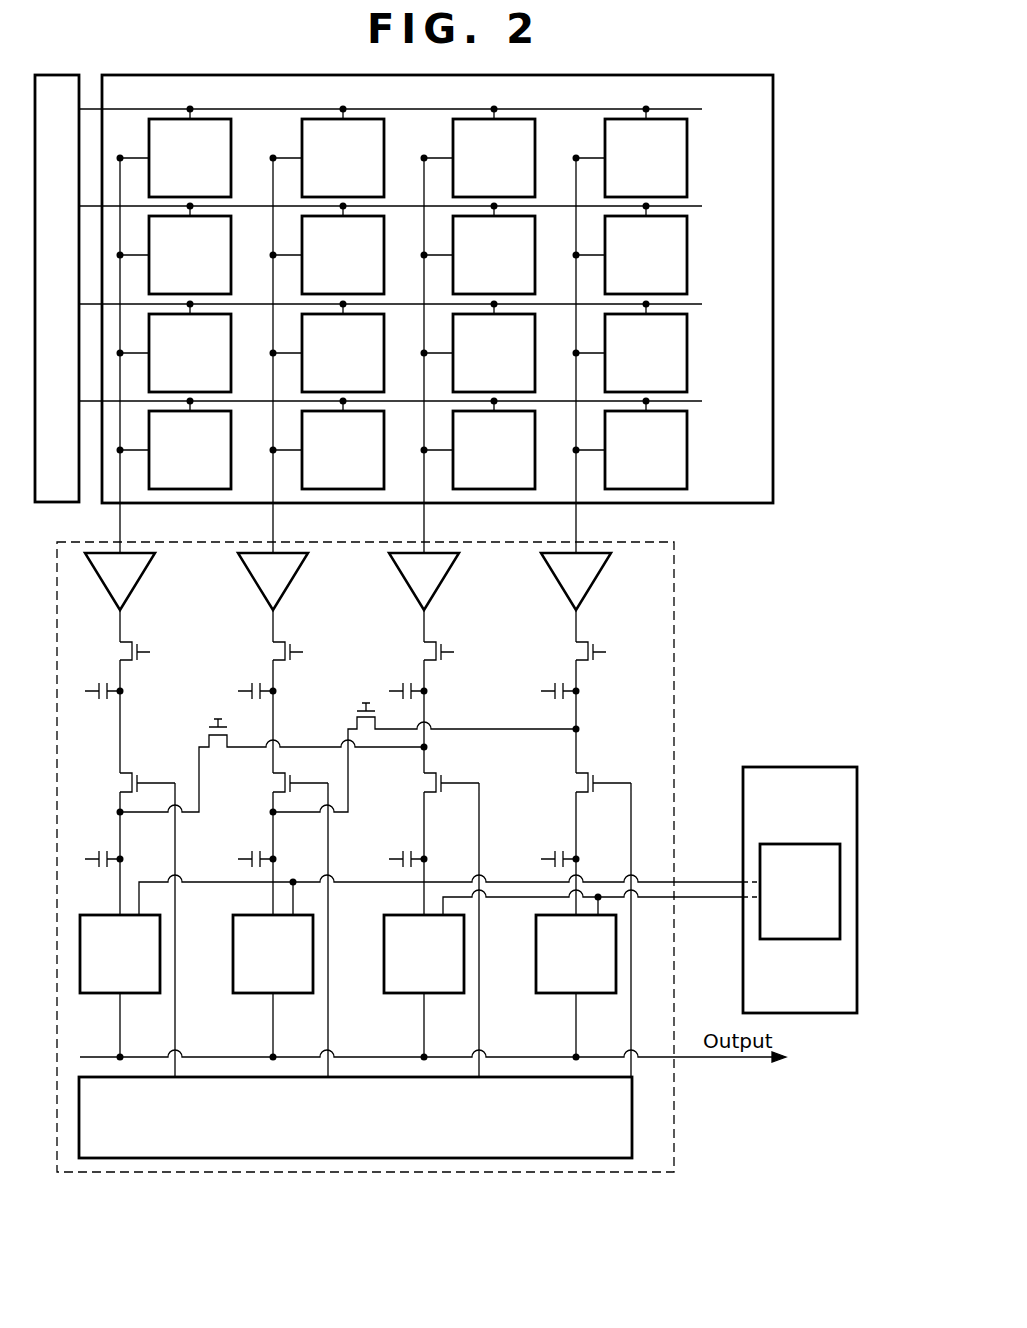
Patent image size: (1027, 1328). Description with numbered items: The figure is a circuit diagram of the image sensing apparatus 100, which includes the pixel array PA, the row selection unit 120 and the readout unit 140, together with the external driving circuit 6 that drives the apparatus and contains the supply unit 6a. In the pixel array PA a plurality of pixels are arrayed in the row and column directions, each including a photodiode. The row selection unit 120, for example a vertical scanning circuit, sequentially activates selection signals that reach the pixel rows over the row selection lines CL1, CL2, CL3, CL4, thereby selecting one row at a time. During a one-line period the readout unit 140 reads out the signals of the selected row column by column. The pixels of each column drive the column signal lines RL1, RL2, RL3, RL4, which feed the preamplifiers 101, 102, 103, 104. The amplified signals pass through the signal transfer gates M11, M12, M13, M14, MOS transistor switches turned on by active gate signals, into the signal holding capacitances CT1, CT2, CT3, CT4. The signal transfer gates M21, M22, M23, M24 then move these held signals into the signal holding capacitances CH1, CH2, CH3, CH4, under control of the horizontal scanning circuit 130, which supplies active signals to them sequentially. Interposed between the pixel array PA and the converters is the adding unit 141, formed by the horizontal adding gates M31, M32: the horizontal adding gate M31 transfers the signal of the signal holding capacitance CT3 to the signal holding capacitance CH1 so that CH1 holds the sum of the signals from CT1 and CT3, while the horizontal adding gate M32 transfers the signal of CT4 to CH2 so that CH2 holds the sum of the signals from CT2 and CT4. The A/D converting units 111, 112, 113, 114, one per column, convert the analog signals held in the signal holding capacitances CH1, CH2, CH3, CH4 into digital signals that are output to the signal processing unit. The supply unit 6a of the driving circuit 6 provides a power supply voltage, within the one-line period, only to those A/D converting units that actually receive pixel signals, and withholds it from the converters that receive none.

The row selection unit 120 is at (58, 73).
The pixel array PA is at (741, 528).
The row selection line CL1 is at (731, 145).
The row selection line CL2 is at (731, 242).
The row selection line CL3 is at (731, 340).
The row selection line CL4 is at (731, 437).
The column signal line RL1 is at (139, 525).
The column signal line RL2 is at (327, 330).
The column signal line RL3 is at (478, 330).
The column signal line RL4 is at (630, 330).
The preamplifier 101 is at (134, 592).
The preamplifier 102 is at (297, 597).
The preamplifier 103 is at (448, 597).
The preamplifier 104 is at (600, 597).
The signal transfer gate M11 is at (153, 701).
The signal transfer gate M12 is at (306, 701).
The signal transfer gate M13 is at (457, 701).
The signal transfer gate M14 is at (609, 701).
The signal holding capacitance CT1 is at (97, 679).
The signal holding capacitance CT2 is at (250, 679).
The signal holding capacitance CT3 is at (401, 679).
The signal holding capacitance CT4 is at (553, 679).
The signal transfer gate M21 is at (153, 919).
The signal transfer gate M22 is at (306, 919).
The signal transfer gate M23 is at (457, 919).
The signal transfer gate M24 is at (609, 919).
The signal holding capacitance CH1 is at (97, 847).
The signal holding capacitance CH2 is at (250, 847).
The signal holding capacitance CH3 is at (401, 847).
The signal holding capacitance CH4 is at (553, 847).
The horizontal adding gate M31 is at (272, 759).
The horizontal adding gate M32 is at (425, 752).
The adding unit 141 is at (348, 726).
The A/D converting unit 111 is at (93, 993).
The A/D converting unit 112 is at (269, 988).
The A/D converting unit 113 is at (420, 988).
The A/D converting unit 114 is at (572, 988).
The driving circuit 6 is at (841, 767).
The supply unit 6a is at (800, 940).
The horizontal scanning circuit 130 is at (605, 1158).
The readout unit 140 is at (676, 1160).
The image sensing apparatus 100 is at (445, 1201).